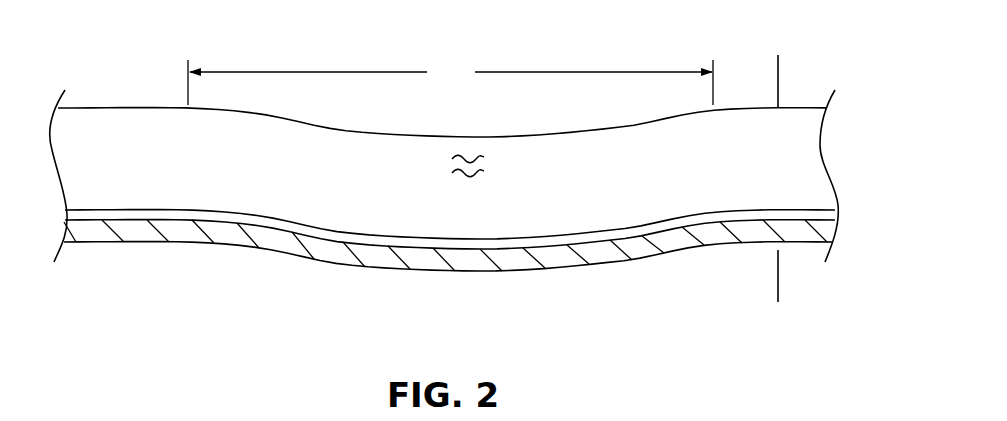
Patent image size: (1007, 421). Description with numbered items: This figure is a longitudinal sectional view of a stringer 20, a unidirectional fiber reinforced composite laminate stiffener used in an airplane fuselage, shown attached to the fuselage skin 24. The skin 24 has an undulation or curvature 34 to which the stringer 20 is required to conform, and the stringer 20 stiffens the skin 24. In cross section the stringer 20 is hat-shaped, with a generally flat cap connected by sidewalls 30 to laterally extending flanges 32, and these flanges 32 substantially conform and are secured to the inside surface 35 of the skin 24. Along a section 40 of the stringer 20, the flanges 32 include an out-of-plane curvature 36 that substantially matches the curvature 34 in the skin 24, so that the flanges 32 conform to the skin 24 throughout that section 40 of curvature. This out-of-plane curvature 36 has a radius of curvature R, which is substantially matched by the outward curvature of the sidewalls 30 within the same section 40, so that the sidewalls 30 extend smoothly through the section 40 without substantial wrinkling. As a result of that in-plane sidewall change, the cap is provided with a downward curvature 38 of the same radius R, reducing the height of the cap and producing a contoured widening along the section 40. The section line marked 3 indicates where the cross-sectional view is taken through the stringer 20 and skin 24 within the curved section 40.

The stringer 20 is at (820, 84).
The skin 24 is at (247, 245).
The sidewalls 30 is at (114, 132).
The flanges 32 is at (167, 217).
The curvature 34 is at (442, 271).
The inside surface 35 is at (93, 212).
The out-of-plane curvature 36 is at (515, 236).
The downward curvature 38 is at (519, 133).
The section 40 is at (380, 297).
The radius of curvature R is at (458, 235).
The section line 3- 3 is at (740, 66).